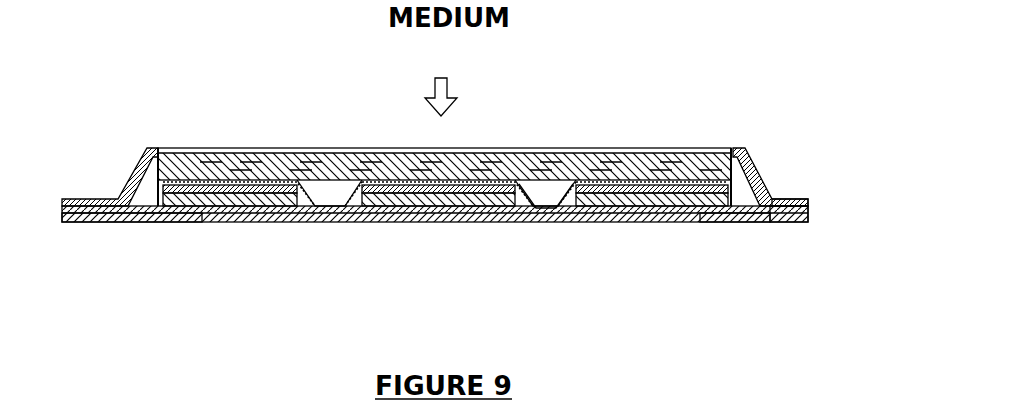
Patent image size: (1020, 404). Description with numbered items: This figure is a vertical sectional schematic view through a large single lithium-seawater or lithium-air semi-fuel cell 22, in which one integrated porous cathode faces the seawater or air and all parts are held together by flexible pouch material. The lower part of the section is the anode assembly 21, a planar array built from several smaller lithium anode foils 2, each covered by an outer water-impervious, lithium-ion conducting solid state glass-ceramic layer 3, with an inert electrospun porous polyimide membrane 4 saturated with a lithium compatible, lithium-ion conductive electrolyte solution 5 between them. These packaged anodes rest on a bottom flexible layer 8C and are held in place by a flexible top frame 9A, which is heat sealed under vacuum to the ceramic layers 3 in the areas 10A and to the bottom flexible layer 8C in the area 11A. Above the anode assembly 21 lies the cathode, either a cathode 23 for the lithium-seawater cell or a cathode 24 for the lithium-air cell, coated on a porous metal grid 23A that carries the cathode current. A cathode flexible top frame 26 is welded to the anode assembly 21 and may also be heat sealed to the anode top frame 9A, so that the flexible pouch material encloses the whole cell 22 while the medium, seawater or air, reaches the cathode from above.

The lithium anode foil 2 is at (240, 219).
The solid state glass-ceramic layer 3 is at (236, 190).
The electrospun porous polyimide membrane 4 is at (466, 126).
The electrolyte solution 5 is at (200, 192).
The bottom flexible layer 8C is at (185, 223).
The flexible top frame 9A is at (758, 184).
The heat seal area 10A is at (586, 176).
The heat seal area 11A is at (752, 222).
The anode assembly 21 is at (793, 222).
The large single lithium-seawater or lithium-air semi-fuel cell 22 is at (720, 360).
The cathode for lithium-seawater cell 23 is at (444, 115).
The cathode for lithium-air cell 24 is at (467, 156).
The porous metal grid 23A is at (284, 166).
The cathode flexible top frame 26 is at (122, 194).